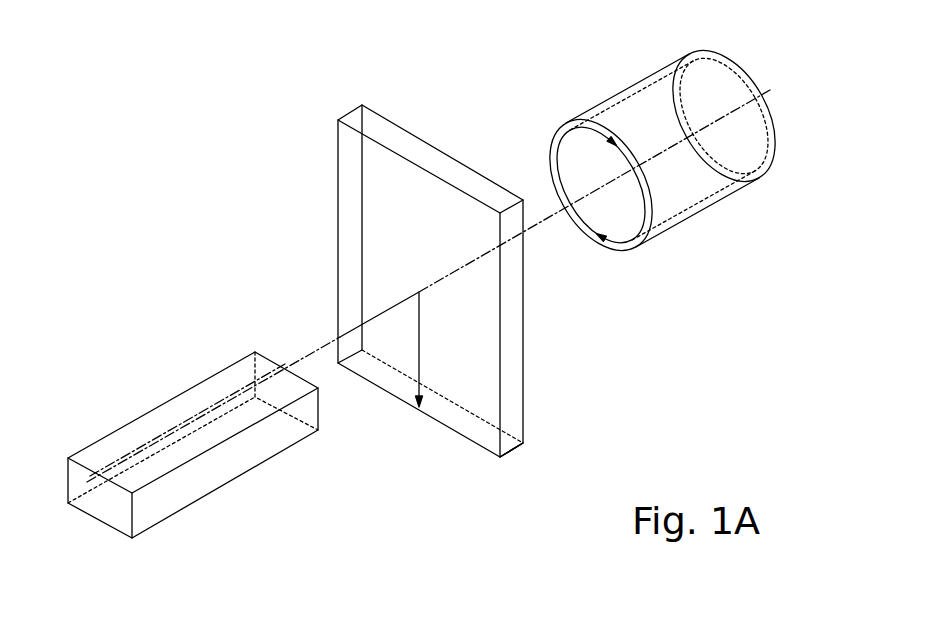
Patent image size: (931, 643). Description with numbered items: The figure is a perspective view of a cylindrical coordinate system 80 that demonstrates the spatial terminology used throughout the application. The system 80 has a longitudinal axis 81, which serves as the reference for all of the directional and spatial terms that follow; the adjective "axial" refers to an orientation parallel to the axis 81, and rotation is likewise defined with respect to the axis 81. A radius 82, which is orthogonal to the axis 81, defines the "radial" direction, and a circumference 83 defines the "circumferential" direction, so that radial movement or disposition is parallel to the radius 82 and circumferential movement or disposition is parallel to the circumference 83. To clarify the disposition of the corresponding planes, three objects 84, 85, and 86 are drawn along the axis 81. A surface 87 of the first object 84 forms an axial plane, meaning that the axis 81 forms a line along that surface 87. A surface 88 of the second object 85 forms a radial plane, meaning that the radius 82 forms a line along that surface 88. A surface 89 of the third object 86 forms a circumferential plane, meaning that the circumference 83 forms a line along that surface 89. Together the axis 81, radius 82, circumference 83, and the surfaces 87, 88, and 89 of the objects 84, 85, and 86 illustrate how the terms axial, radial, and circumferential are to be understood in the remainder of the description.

The cylindrical coordinate system 80 is at (290, 159).
The longitudinal axis 81 is at (770, 90).
The radius 82 is at (420, 345).
The circumference 83 is at (550, 148).
The object 84 is at (160, 523).
The object 85 is at (543, 456).
The object 86 is at (694, 226).
The surface 87 is at (153, 425).
The surface 88 is at (352, 240).
The surface 89 is at (627, 91).